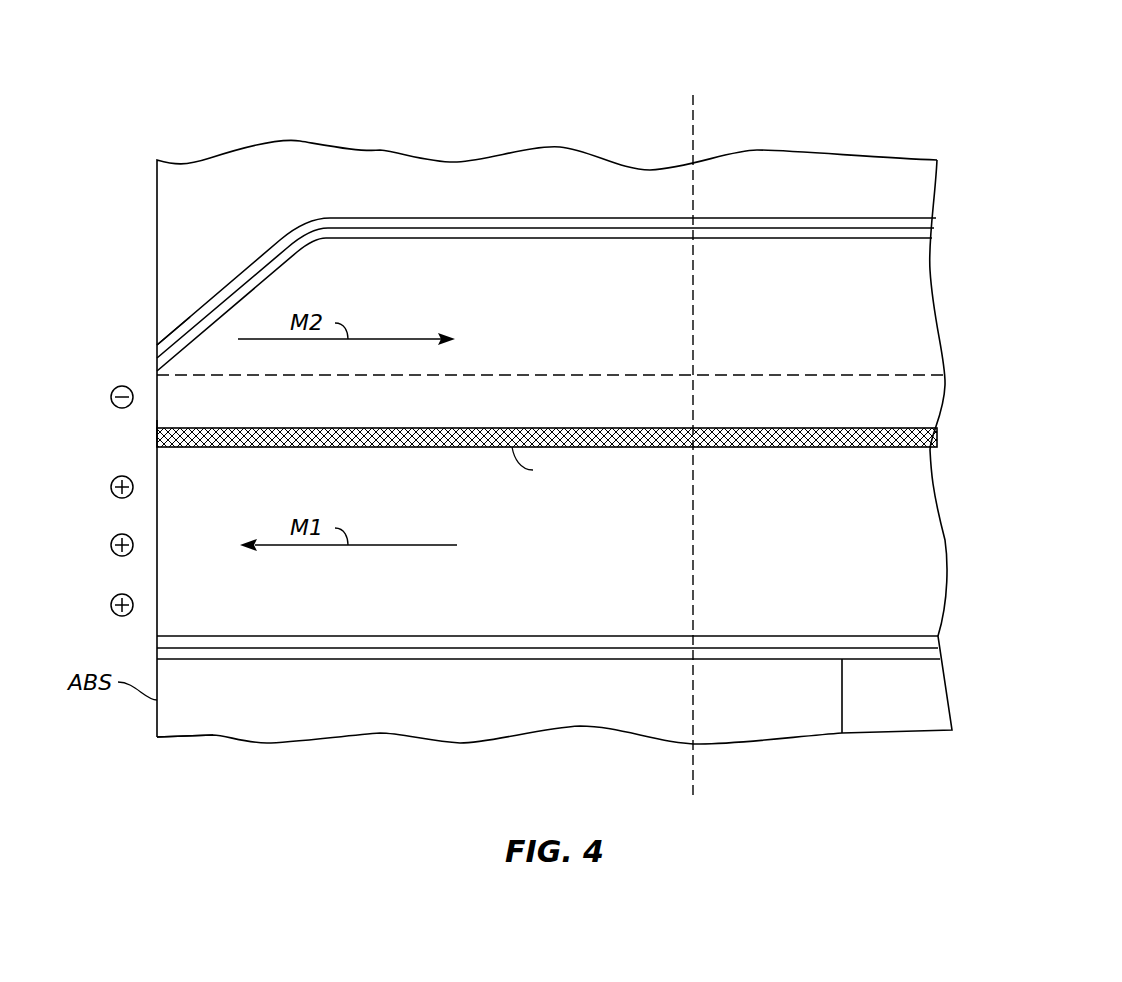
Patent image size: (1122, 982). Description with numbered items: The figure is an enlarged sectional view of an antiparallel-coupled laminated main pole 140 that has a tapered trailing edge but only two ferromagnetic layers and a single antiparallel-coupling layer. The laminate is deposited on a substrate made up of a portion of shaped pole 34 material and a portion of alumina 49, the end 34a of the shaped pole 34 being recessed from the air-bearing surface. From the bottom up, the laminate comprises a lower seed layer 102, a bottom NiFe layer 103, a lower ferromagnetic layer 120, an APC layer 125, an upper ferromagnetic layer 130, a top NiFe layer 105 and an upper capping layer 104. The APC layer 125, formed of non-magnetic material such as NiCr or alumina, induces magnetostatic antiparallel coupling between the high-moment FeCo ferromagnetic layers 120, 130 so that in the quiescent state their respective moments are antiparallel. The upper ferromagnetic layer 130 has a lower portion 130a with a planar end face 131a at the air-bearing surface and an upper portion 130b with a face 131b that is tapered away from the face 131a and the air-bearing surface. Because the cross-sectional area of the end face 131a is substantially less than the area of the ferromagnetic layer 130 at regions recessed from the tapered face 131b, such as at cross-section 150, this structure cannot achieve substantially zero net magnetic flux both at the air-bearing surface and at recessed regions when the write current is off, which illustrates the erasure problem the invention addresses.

The antiparallel-coupled laminated main pole 140 is at (880, 106).
The upper capping layer 104 is at (937, 222).
The top NiFe layer 105 is at (937, 236).
The upper ferromagnetic layer 130 is at (1030, 237).
The lower portion of upper ferromagnetic layer 130a is at (933, 404).
The upper portion of upper ferromagnetic layer 130b is at (933, 343).
The APC layer 125 is at (935, 437).
The lower ferromagnetic layer 120 is at (940, 550).
The bottom NiFe layer 103 is at (935, 643).
The lower seed layer 102 is at (937, 655).
The shaped pole 34 is at (935, 698).
The end of shaped pole 34a is at (842, 710).
The cross-section 150 is at (693, 770).
The alumina portion 49 is at (213, 727).
The planar end face 131a is at (157, 423).
The tapered face 131b is at (190, 348).